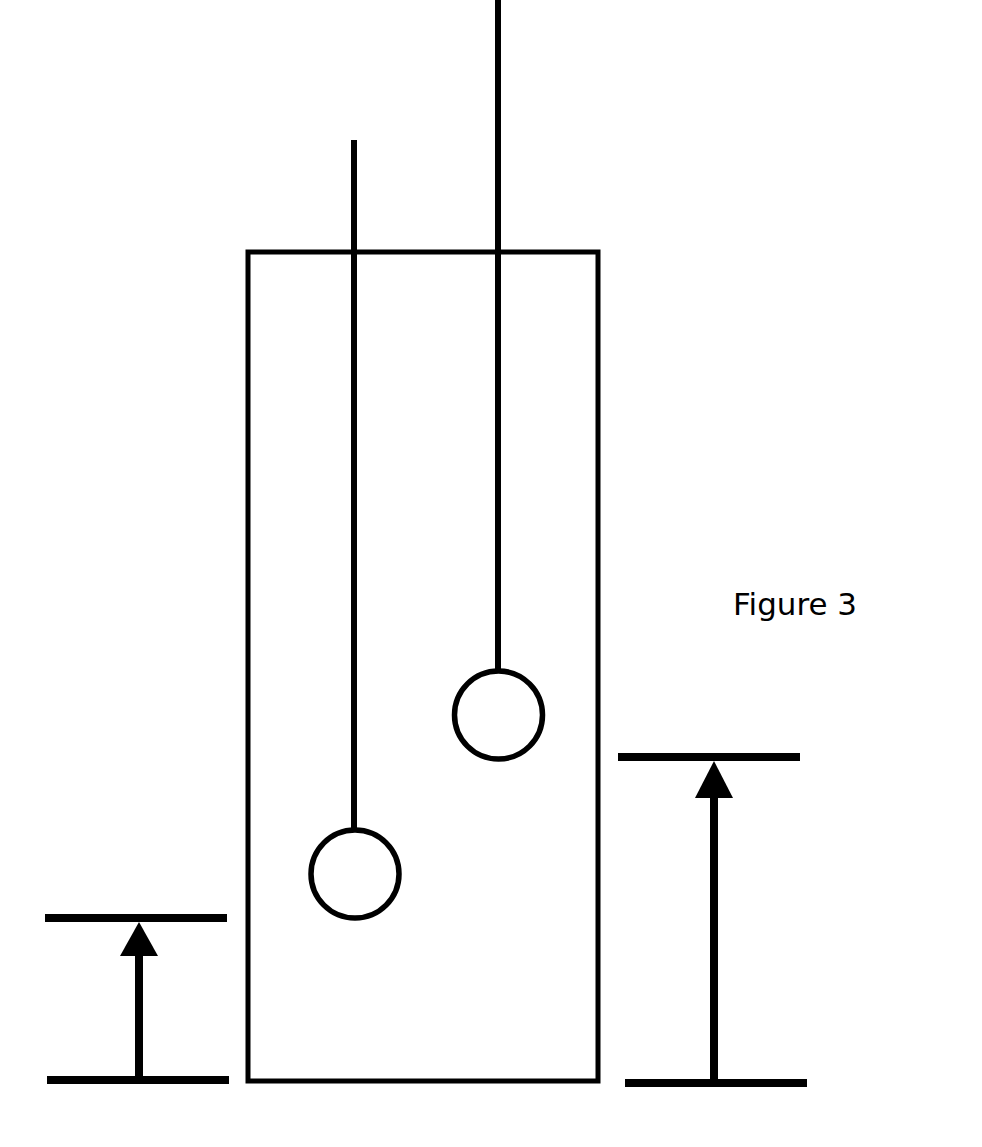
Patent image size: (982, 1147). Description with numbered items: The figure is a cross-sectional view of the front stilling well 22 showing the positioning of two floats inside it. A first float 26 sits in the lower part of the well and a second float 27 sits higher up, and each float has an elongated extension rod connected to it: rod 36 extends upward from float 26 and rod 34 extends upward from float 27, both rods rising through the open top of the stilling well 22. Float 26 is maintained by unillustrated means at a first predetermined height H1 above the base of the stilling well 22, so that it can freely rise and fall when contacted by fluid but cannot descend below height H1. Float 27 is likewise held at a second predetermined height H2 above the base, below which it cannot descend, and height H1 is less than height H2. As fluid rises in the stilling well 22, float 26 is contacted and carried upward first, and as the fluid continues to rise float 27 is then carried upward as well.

The front stilling well 22 is at (598, 378).
The elongated extension rod 34 is at (510, 164).
The elongated extension rod 36 is at (343, 217).
The float 26 is at (312, 857).
The float 27 is at (497, 705).
The first predetermined height H1 is at (126, 1005).
The second predetermined height H2 is at (728, 915).